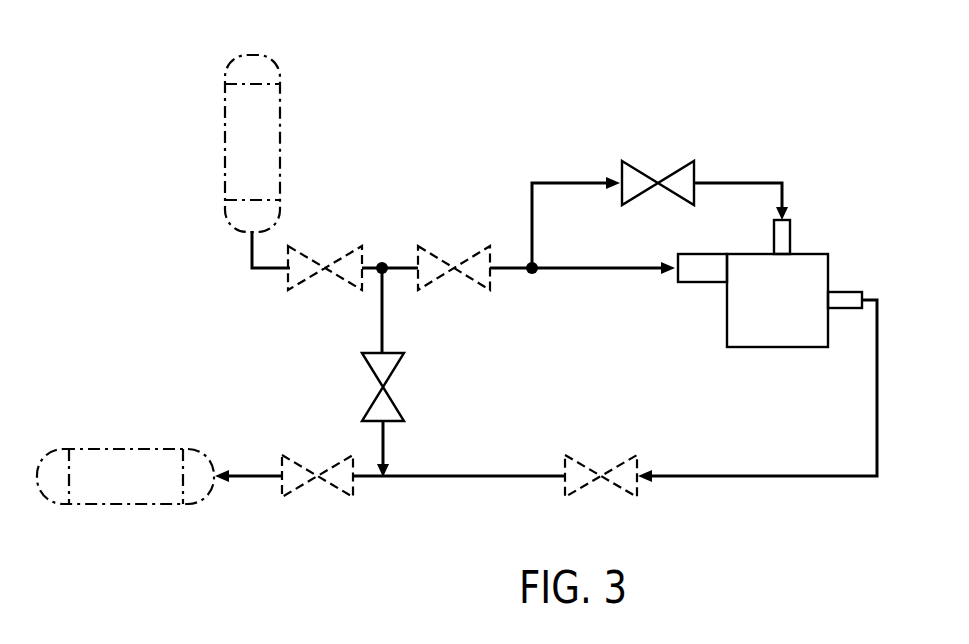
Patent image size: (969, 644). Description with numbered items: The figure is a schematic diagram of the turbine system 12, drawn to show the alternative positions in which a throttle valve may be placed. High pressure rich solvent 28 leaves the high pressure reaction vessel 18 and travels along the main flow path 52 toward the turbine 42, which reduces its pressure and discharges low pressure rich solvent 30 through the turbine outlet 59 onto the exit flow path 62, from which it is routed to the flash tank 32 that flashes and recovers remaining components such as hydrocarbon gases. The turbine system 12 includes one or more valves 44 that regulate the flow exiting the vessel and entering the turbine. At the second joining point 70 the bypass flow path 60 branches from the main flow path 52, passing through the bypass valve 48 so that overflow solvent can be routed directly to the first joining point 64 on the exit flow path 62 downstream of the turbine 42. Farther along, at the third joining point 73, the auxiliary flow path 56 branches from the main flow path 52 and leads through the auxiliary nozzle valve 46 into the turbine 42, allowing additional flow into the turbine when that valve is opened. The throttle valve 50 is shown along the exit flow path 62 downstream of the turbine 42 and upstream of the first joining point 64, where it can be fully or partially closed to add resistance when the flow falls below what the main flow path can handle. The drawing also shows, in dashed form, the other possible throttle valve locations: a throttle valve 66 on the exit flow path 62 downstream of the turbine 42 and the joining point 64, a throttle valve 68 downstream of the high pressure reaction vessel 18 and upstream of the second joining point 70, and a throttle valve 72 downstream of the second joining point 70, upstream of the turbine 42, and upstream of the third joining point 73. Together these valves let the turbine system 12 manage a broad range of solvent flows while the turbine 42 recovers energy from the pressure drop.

The turbine system 12 is at (815, 141).
The high pressure reaction vessel 18 is at (280, 141).
The high pressure rich solvent 28 is at (272, 272).
The low pressure rich solvent 30 is at (877, 388).
The flash tank 32 is at (125, 449).
The turbine 42 is at (829, 272).
The valves 44 is at (442, 136).
The auxiliary nozzle valve 46 is at (672, 170).
The bypass valve 48 is at (390, 400).
The throttle valve 50 is at (618, 488).
The main flow path 52 is at (566, 270).
The auxiliary flow path 56 is at (572, 181).
The turbine outlet 59 is at (845, 310).
The bypass flow path 60 is at (385, 446).
The exit flow path 62 is at (252, 478).
The first joining point 64 is at (383, 478).
The throttle valve 66 is at (325, 497).
The throttle valve 68 is at (304, 287).
The second joining point 70 is at (381, 262).
The throttle valve 72 is at (467, 290).
The third joining point 73 is at (532, 274).